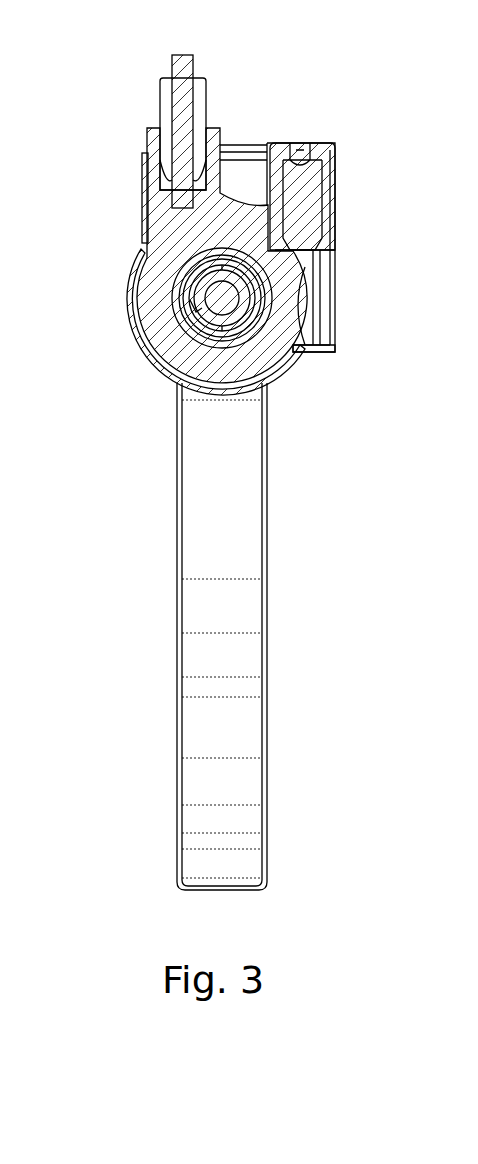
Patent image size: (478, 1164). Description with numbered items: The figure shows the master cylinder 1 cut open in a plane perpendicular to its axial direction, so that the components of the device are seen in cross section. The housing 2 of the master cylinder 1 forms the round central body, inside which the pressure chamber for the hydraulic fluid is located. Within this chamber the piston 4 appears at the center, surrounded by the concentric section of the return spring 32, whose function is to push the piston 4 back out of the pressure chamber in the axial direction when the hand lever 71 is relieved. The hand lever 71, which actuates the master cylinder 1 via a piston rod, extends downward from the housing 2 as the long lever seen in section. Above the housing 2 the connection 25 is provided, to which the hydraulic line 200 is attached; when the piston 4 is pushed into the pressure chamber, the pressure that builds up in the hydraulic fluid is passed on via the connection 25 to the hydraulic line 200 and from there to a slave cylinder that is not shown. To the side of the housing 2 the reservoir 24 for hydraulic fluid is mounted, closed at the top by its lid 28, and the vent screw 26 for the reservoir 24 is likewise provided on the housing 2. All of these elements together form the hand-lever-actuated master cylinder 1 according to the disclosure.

The master cylinder 1 is at (358, 258).
The housing 2 is at (132, 320).
The piston 4 is at (228, 302).
The reservoir 24 is at (312, 337).
The connection 25 is at (145, 170).
The vent screw 26 is at (337, 155).
The lid 28 is at (328, 312).
The return spring 32 is at (180, 288).
The hand lever 71 is at (175, 499).
The hydraulic line 200 is at (190, 67).